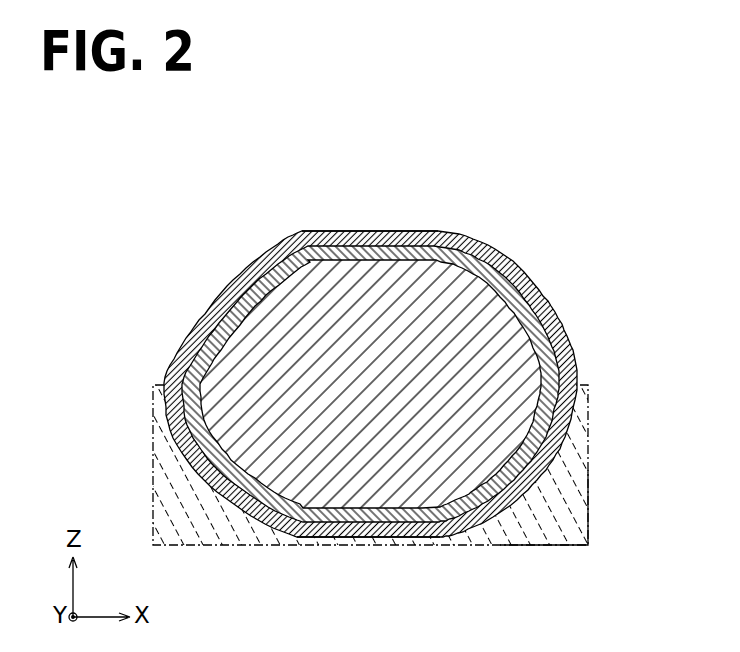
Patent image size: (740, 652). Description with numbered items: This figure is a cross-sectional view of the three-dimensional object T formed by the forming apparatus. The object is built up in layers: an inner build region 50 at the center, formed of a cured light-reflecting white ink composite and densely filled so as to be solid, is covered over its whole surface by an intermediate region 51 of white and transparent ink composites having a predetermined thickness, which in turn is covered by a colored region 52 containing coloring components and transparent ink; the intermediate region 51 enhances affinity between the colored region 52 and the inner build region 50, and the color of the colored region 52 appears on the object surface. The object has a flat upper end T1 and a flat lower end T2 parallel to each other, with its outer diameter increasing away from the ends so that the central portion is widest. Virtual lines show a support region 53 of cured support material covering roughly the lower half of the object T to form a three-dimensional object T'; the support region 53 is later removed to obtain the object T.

The inner build region 50 is at (300, 492).
The intermediate region 51 is at (376, 514).
The colored region 52 is at (432, 528).
The support region 53 is at (579, 472).
The three-dimensional object T is at (346, 368).
The upper end T1 is at (374, 231).
The lower end T2 is at (337, 539).
The three-dimensional object T' is at (589, 538).